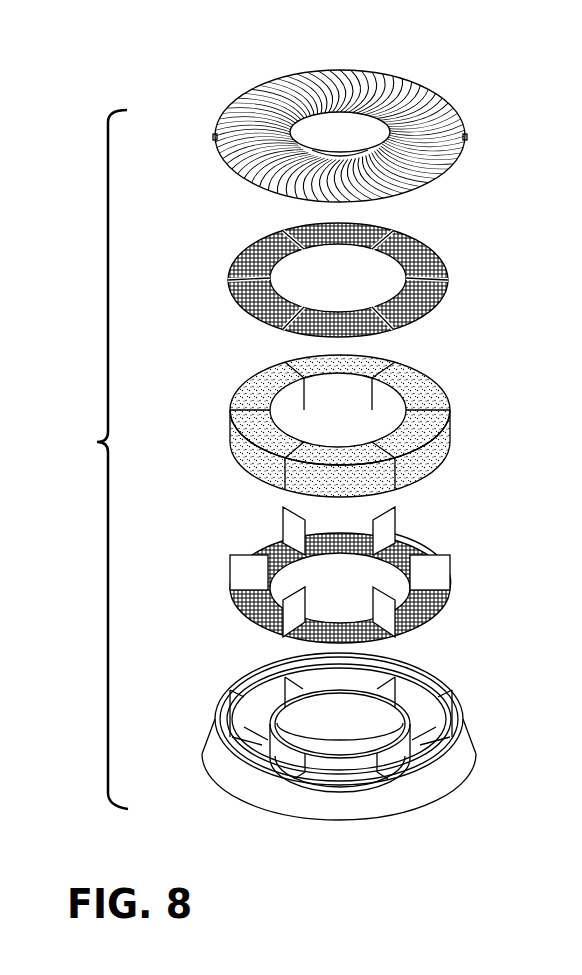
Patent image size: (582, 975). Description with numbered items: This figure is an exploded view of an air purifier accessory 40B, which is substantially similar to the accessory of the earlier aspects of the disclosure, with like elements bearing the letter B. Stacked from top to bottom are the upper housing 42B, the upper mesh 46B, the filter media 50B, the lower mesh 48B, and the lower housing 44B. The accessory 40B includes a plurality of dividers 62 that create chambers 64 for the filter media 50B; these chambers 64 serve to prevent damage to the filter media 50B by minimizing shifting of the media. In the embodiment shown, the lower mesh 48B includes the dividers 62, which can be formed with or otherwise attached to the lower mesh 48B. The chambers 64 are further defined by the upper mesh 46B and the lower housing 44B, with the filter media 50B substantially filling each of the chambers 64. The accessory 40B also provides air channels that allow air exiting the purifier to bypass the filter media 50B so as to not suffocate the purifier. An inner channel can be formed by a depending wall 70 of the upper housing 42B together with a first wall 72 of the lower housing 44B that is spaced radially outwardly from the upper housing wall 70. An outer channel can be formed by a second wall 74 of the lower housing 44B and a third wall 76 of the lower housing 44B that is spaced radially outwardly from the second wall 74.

The air purifier accessory 40B is at (88, 459).
The upper housing 42B is at (460, 117).
The depending wall 70 is at (282, 83).
The upper mesh 46B is at (443, 257).
The filter media 50B is at (445, 392).
The lower mesh 48B is at (413, 607).
The dividers 62 is at (245, 562).
The chambers 64 is at (413, 543).
The lower housing 44B is at (468, 753).
The second wall 74 is at (255, 683).
The first wall 72 is at (387, 696).
The third wall 76 is at (210, 712).